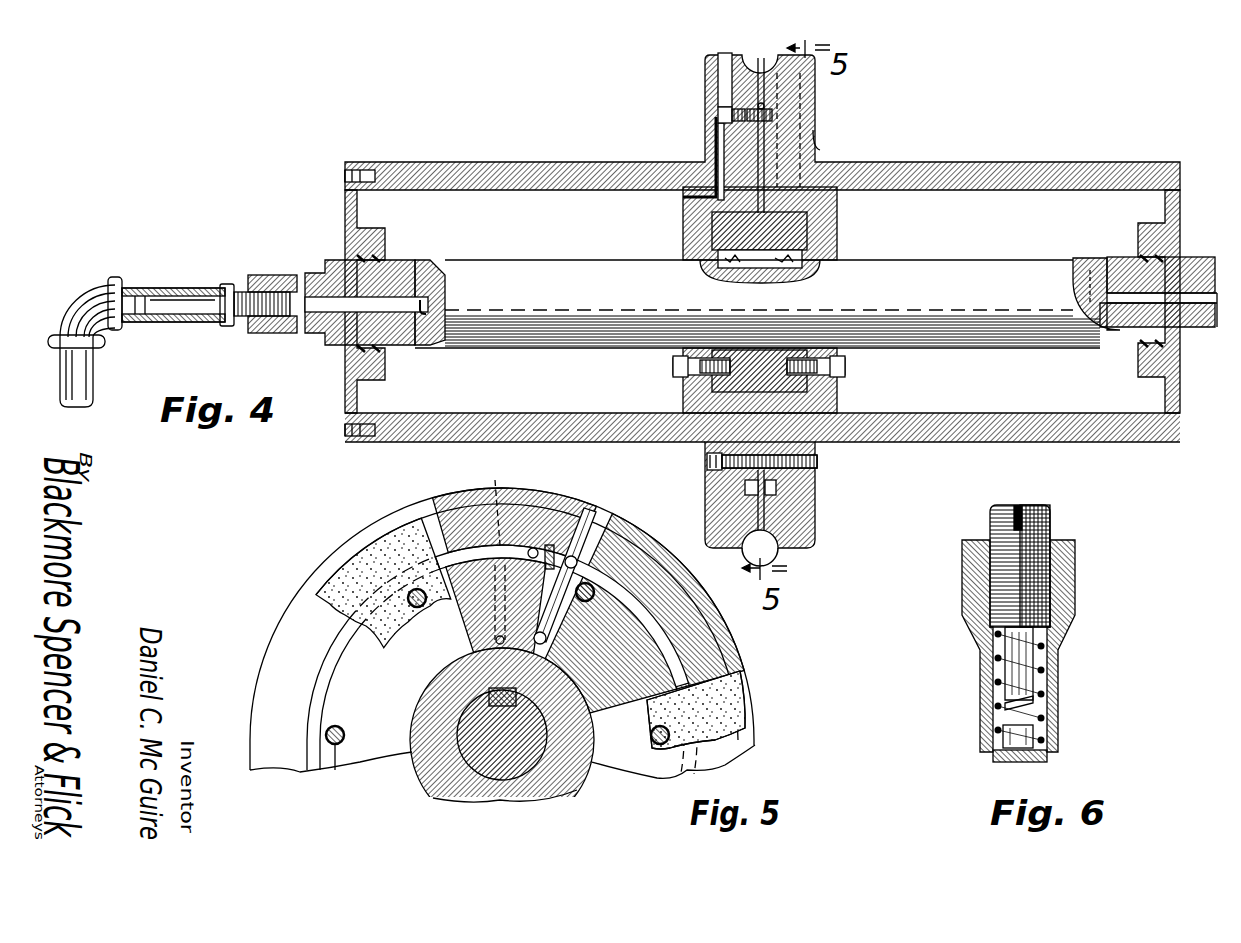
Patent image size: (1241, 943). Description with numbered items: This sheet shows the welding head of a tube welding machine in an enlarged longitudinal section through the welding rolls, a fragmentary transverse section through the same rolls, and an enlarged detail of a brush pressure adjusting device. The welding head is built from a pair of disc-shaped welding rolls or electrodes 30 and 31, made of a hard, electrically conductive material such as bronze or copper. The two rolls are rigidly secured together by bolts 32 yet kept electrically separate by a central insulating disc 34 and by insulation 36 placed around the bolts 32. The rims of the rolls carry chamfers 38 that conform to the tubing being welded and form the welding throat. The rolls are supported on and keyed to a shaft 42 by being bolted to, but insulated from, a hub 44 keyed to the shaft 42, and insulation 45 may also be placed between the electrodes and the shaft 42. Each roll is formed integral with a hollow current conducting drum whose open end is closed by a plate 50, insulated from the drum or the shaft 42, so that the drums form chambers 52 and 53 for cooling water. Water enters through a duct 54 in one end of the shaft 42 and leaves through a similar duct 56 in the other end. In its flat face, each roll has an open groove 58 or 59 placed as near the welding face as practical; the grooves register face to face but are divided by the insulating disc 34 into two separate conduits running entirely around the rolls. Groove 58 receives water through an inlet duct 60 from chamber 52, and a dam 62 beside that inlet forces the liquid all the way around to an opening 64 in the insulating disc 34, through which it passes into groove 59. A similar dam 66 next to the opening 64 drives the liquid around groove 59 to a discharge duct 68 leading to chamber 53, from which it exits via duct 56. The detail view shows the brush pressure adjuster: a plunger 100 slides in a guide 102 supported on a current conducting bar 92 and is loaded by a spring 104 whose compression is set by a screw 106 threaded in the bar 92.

In FIG. 4, the welding roll 30 is at (708, 97).
In FIG. 4, the welding roll 31 is at (803, 143).
In FIG. 4, the bolts 32 is at (722, 465).
In FIG. 5, the bolts 32 is at (340, 727).
In FIG. 4, the central insulating disc 34 is at (760, 105).
In FIG. 5, the central insulating disc 34 is at (372, 560).
In FIG. 4, the insulation 36 is at (712, 456).
In FIG. 5, the insulation 36 is at (336, 750).
In FIG. 4, the chamfers 38 is at (800, 545).
In FIG. 4, the shaft 42 is at (968, 270).
In FIG. 5, the shaft 42 is at (505, 762).
In FIG. 4, the hub 44 is at (714, 238).
In FIG. 4, the insulation 45 is at (696, 266).
In FIG. 4, the plate 50 is at (352, 240).
In FIG. 4, the chamber 52 is at (446, 405).
In FIG. 4, the chamber 53 is at (1063, 403).
In FIG. 4, the duct 54 is at (421, 268).
In FIG. 4, the duct 56 is at (1186, 278).
In FIG. 4, the groove 58 is at (748, 490).
In FIG. 5, the groove 58 is at (690, 757).
In FIG. 4, the groove 59 is at (776, 487).
In FIG. 5, the groove 59 is at (690, 658).
In FIG. 4, the inlet duct 60 is at (748, 118).
In FIG. 5, the inlet duct 60 is at (488, 515).
In FIG. 4, the dam 62 is at (718, 115).
In FIG. 5, the dam 62 is at (530, 548).
In FIG. 5, the opening 64 is at (549, 545).
In FIG. 4, the dam 66 is at (766, 108).
In FIG. 5, the dam 66 is at (565, 545).
In FIG. 4, the discharge duct 68 is at (800, 123).
In FIG. 5, the discharge duct 68 is at (598, 520).
In FIG. 6, the current conducting bar 92 is at (1068, 563).
In FIG. 6, the plunger 100 is at (1052, 738).
In FIG. 6, the guide 102 is at (1060, 678).
In FIG. 6, the spring 104 is at (1046, 640).
In FIG. 6, the screw 106 is at (1038, 528).